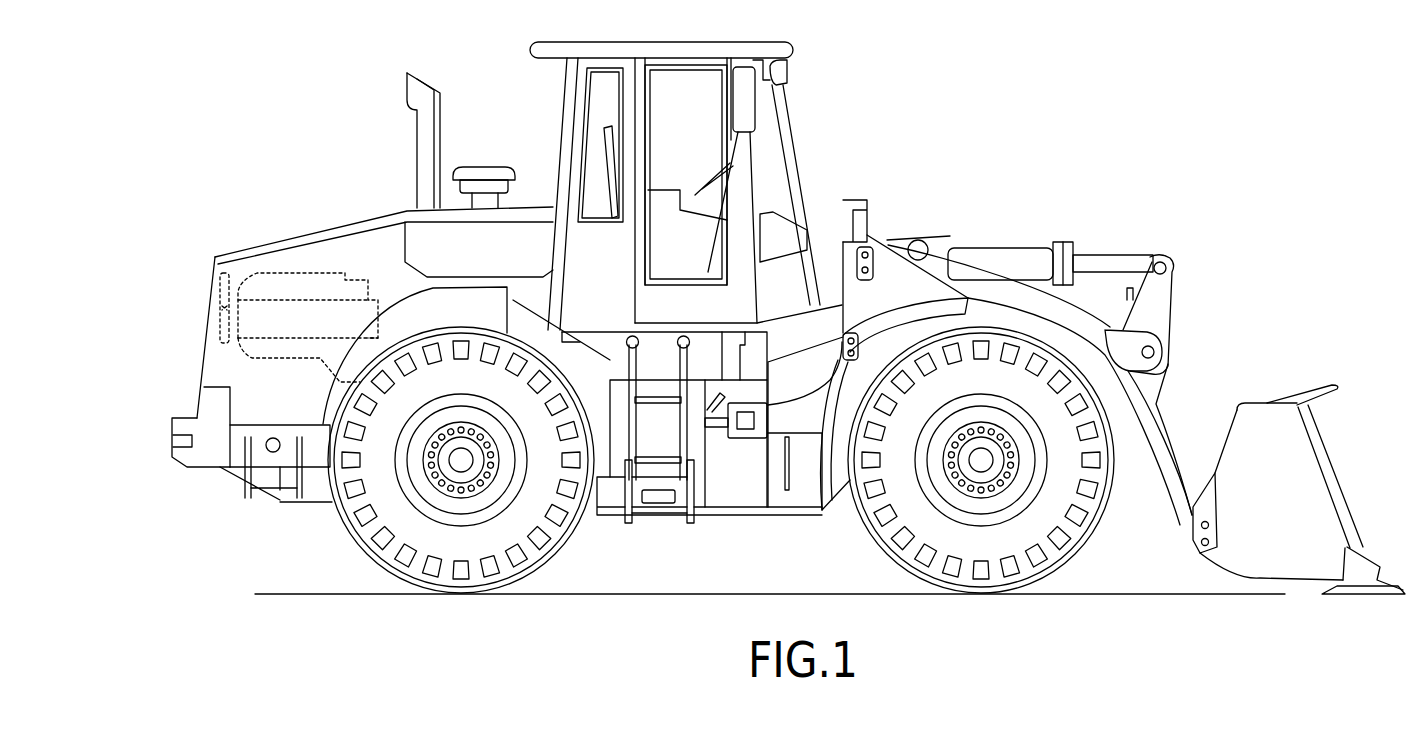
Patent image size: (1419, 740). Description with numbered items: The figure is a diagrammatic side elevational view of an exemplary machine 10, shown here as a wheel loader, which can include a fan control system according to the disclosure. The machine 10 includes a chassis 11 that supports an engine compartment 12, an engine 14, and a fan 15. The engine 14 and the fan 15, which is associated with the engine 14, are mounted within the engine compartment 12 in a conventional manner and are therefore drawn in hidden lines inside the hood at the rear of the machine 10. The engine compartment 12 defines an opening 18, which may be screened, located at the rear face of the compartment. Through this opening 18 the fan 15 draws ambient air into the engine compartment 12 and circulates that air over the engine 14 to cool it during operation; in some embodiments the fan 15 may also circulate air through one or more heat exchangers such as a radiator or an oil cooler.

The machine 10 is at (762, 318).
The chassis 11 is at (732, 515).
The engine compartment 12 is at (328, 229).
The engine 14 is at (302, 363).
The fan 15 is at (228, 337).
The opening 18 is at (212, 288).